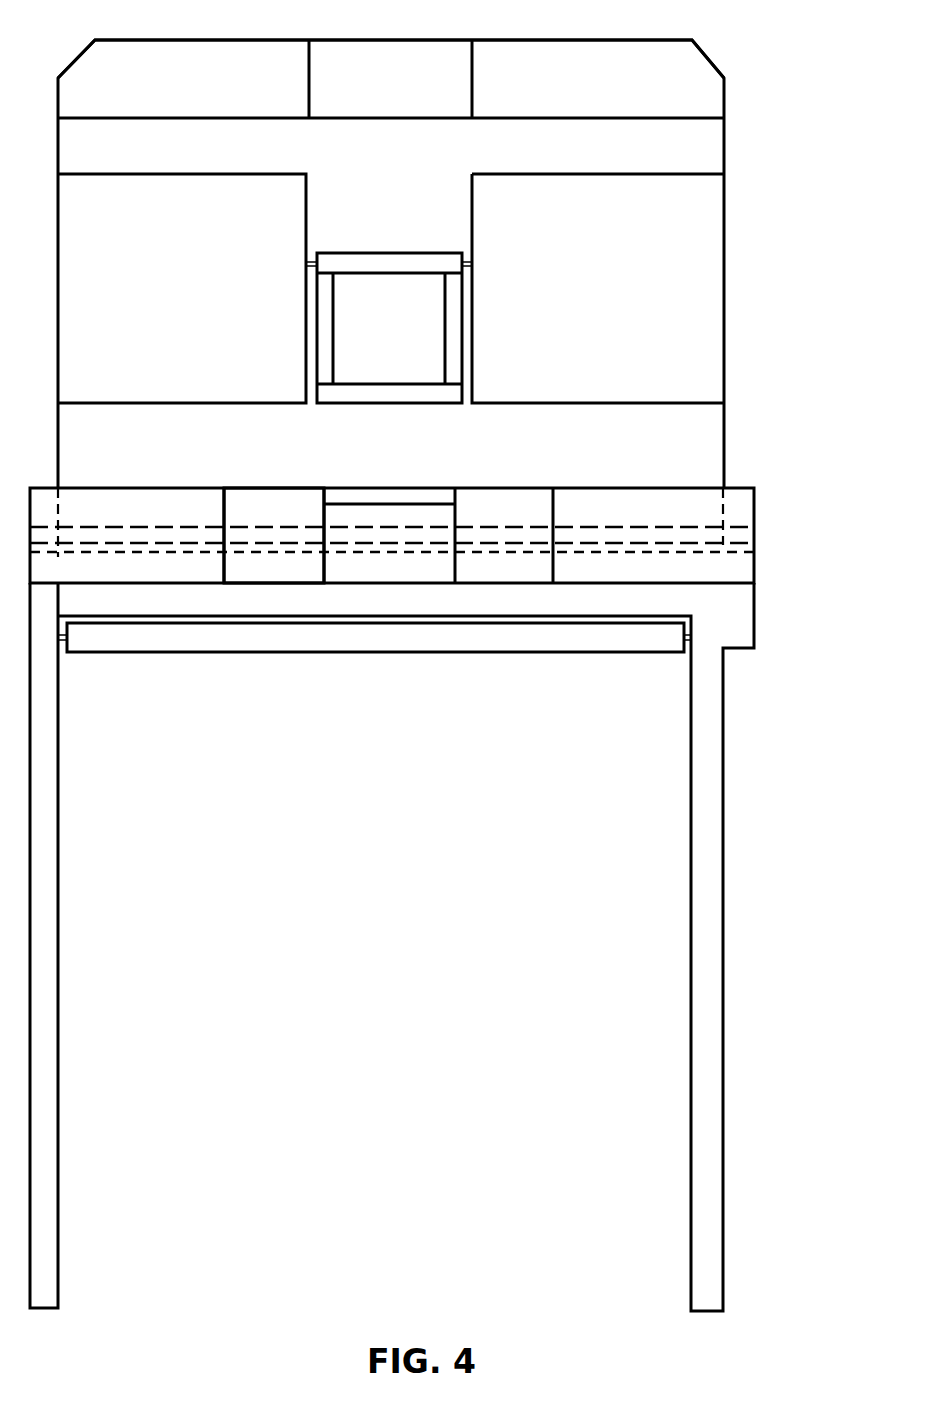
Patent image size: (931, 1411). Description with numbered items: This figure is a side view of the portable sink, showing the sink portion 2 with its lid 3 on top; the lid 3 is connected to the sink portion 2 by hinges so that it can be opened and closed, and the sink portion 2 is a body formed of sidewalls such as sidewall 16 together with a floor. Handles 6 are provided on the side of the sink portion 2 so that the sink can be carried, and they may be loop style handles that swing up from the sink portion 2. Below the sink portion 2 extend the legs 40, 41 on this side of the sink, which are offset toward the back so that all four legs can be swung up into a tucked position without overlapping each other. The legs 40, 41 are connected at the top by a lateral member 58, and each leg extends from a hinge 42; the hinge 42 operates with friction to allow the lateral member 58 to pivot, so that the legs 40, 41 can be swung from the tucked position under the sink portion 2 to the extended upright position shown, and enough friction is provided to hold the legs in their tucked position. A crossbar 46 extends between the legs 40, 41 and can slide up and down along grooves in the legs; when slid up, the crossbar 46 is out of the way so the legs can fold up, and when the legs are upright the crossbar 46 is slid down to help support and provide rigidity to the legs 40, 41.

The sink portion 2 is at (449, 264).
The lid 3 is at (719, 55).
The handles 6 is at (460, 283).
The sidewall 16 is at (690, 247).
The leg 40 is at (726, 1030).
The leg 41 is at (61, 977).
The hinge 42 is at (441, 505).
The crossbar 46 is at (432, 656).
The lateral member 58 is at (275, 508).